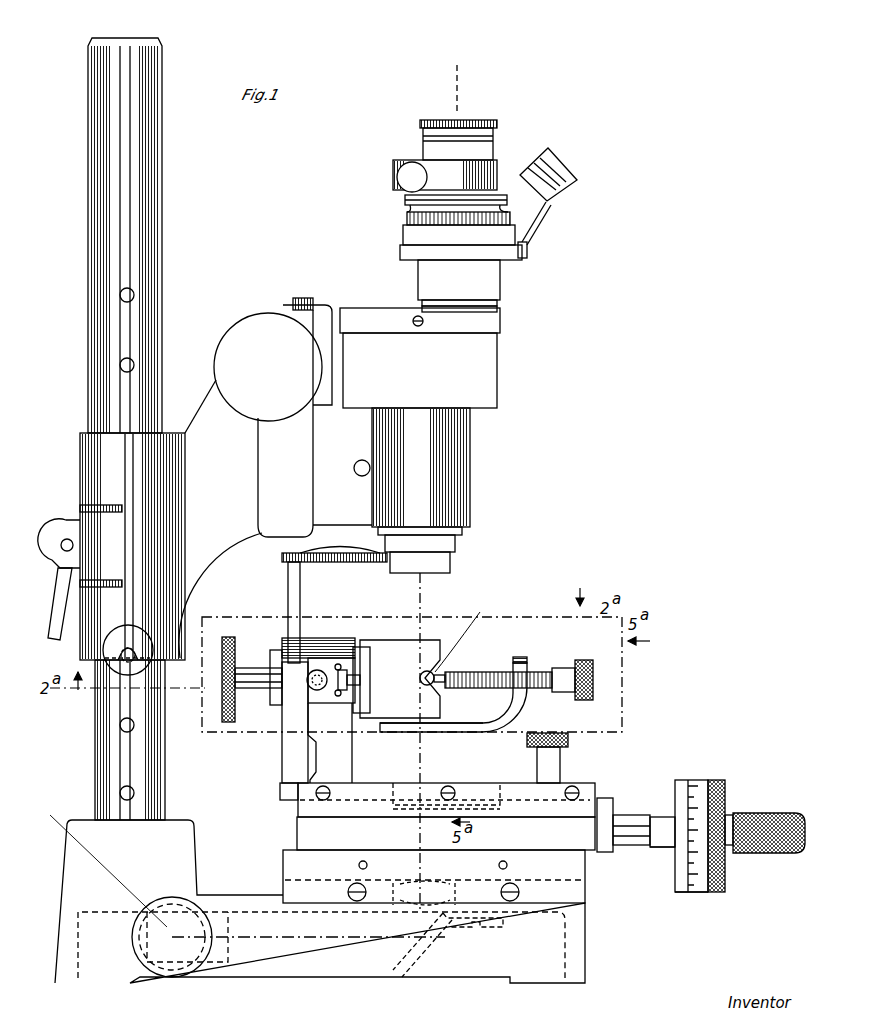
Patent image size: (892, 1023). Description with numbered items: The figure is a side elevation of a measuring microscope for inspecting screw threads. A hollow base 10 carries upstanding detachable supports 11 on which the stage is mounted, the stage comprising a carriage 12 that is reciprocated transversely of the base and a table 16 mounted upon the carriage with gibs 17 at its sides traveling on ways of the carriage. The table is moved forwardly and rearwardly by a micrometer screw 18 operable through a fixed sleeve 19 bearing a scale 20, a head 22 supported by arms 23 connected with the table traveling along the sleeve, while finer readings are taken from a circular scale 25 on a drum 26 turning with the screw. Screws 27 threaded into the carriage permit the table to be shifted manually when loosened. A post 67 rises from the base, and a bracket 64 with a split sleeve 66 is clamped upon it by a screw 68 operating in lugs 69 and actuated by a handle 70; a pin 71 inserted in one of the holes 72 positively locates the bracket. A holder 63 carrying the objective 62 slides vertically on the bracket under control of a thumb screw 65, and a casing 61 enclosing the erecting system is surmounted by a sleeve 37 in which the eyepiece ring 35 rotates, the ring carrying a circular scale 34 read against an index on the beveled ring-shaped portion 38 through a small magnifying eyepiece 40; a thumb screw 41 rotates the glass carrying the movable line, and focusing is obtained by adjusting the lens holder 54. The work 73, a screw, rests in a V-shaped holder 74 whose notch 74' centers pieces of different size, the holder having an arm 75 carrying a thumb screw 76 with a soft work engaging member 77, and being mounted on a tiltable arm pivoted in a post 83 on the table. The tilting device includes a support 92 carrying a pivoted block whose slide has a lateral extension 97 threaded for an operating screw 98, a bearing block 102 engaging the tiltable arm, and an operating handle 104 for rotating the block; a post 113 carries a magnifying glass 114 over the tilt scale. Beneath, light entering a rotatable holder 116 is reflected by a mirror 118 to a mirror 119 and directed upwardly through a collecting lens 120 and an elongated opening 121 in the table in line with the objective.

The hollow frame or base 10 is at (580, 930).
The upstanding detachable supports 11 is at (586, 872).
The carriage 12 is at (310, 830).
The table 16 is at (580, 784).
The gibs 17 is at (609, 797).
The micrometer screw 18 is at (758, 796).
The fixed sleeve 19 is at (660, 850).
The scale 20 is at (662, 817).
The head 22 is at (684, 892).
The arms 23 is at (622, 828).
The circular scale 25 is at (688, 780).
The drum 26 is at (714, 780).
The screws 27 is at (537, 758).
The circular scale 34 is at (407, 218).
The eyepiece ring 35 is at (410, 204).
The sleeve 37 is at (502, 285).
The upstanding beveled ring-shaped portion 38 is at (404, 231).
The small magnifying eyepiece 40 is at (562, 188).
The thumb screw 41 is at (398, 172).
The lens holder 54 is at (495, 124).
The casing 61 is at (498, 370).
The objective 62 is at (460, 545).
The holder 63 is at (470, 466).
The bracket 64 is at (212, 408).
The thumb screw 65 is at (252, 318).
The split sleeve 66 is at (80, 452).
The post 67 is at (90, 375).
The screw 68 is at (67, 538).
The lugs 69 is at (54, 560).
The handle 70 is at (102, 652).
The pin 71 is at (154, 662).
The holes 72 is at (96, 730).
The work 73 is at (440, 676).
The V-shaped holder 74 is at (396, 670).
The notch 74' is at (458, 633).
The arm 75 is at (464, 728).
The thumb screw 76 is at (546, 668).
The detachable work engaging member 77 is at (440, 693).
The post or bearing member 83 is at (322, 748).
The support or bracket 92 is at (282, 712).
The lateral extension 97 is at (328, 660).
The operating screw 98 is at (318, 692).
The bearing block 102 is at (360, 676).
The operating handle 104 is at (250, 668).
The post 113 is at (288, 592).
The magnifying glass 114 is at (345, 558).
The holder 116 is at (210, 958).
The mirror 118 is at (226, 912).
The mirror 119 is at (414, 948).
The collecting lens 120 is at (410, 884).
The elongated opening 121 is at (405, 790).